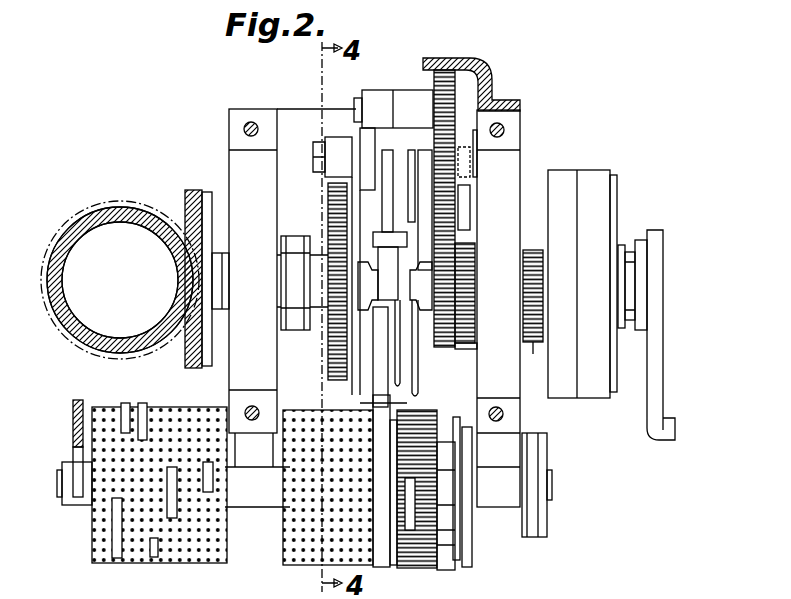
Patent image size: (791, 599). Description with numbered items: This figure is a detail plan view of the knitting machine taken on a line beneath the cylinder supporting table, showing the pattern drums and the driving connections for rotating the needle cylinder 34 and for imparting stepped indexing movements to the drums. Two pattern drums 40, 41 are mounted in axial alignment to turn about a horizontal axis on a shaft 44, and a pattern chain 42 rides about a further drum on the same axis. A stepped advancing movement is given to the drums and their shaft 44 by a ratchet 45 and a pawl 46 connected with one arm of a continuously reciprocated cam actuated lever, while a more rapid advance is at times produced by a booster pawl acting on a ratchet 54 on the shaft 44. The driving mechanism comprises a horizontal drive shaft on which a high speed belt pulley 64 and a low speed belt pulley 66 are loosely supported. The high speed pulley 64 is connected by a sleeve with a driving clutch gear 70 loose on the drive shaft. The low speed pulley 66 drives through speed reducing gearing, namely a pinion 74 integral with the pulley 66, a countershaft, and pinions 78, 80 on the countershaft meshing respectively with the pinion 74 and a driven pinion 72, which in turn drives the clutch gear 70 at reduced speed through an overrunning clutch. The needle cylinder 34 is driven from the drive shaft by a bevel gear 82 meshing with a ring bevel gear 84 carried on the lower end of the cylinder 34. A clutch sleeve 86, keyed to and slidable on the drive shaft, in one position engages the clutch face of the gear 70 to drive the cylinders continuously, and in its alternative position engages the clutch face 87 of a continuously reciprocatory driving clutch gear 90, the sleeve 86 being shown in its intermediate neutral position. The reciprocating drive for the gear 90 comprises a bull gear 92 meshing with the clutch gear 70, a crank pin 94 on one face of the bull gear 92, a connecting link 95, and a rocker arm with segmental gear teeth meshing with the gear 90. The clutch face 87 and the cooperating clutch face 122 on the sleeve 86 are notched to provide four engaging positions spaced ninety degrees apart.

The needle cylinder 34 is at (152, 229).
The pattern drum 40 is at (100, 537).
The pattern drum 41 is at (290, 538).
The pattern chain 42 is at (392, 403).
The shaft 44 is at (243, 505).
The ratchet 45 is at (462, 541).
The pawl 46 is at (466, 402).
The ratchet 54 is at (385, 566).
The high speed belt pulley 64 is at (600, 176).
The low speed belt pulley 66 is at (561, 176).
The driving clutch gear 70 is at (458, 246).
The pinion 72 is at (472, 262).
The pinion 74 is at (532, 246).
The pinion 78 is at (535, 360).
The pinion 80 is at (472, 332).
The bevel gear 82 is at (191, 210).
The ring bevel gear 84 is at (101, 209).
The clutch sleeve 86 is at (374, 260).
The clutch face 87 is at (358, 306).
The reciprocatory driving clutch gear 90 is at (336, 265).
The bull gear 92 is at (470, 100).
The crank pin 94 is at (358, 100).
The connecting link 95 is at (368, 150).
The clutch face 122 is at (338, 298).